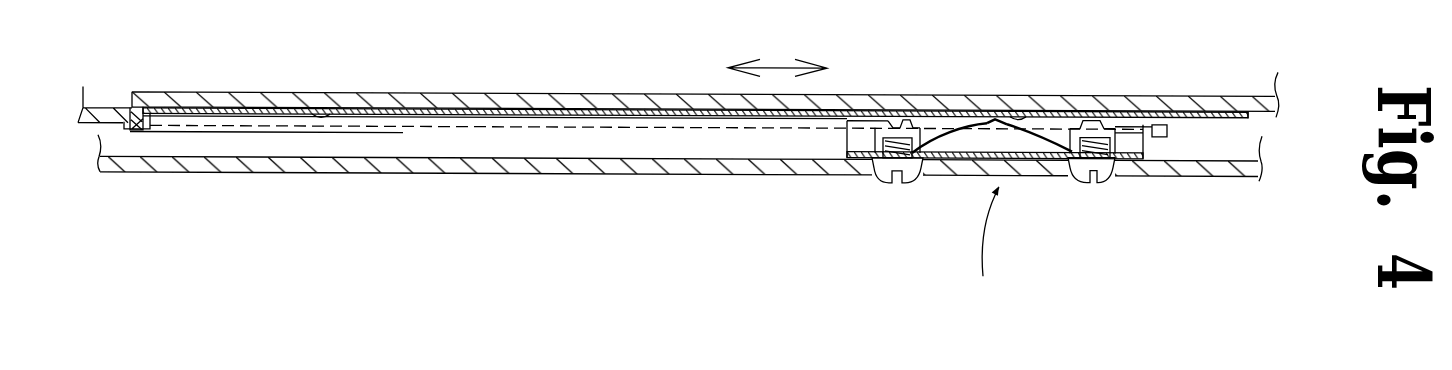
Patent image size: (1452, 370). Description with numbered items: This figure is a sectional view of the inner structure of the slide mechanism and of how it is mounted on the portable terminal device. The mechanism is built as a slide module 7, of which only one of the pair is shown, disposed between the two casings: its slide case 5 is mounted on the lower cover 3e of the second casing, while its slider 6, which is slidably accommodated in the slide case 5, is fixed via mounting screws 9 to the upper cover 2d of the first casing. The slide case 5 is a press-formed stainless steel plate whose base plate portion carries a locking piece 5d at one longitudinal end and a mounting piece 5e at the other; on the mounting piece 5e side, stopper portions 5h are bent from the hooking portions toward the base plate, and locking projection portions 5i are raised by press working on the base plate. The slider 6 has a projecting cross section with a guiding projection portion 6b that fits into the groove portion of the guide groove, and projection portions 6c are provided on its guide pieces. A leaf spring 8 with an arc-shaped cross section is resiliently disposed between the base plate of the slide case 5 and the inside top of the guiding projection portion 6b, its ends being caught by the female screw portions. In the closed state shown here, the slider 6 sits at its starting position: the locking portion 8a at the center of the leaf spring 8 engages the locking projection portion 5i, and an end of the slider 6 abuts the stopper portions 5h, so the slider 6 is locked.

The upper cover 2d is at (468, 171).
The lower cover 3e is at (460, 94).
The slide case 5 is at (851, 109).
The locking piece 5d is at (131, 94).
The mounting piece 5e is at (1240, 112).
The stopper portion 5h is at (1159, 121).
The locking projection portion 5i is at (320, 112).
The slider 6 is at (999, 159).
The guiding projection portion 6b is at (1022, 155).
The projection portion 6c is at (899, 118).
The slide module 7 is at (988, 240).
The leaf spring 8 is at (992, 136).
The locking portion 8a is at (995, 116).
The mounting screw 9 is at (883, 172).